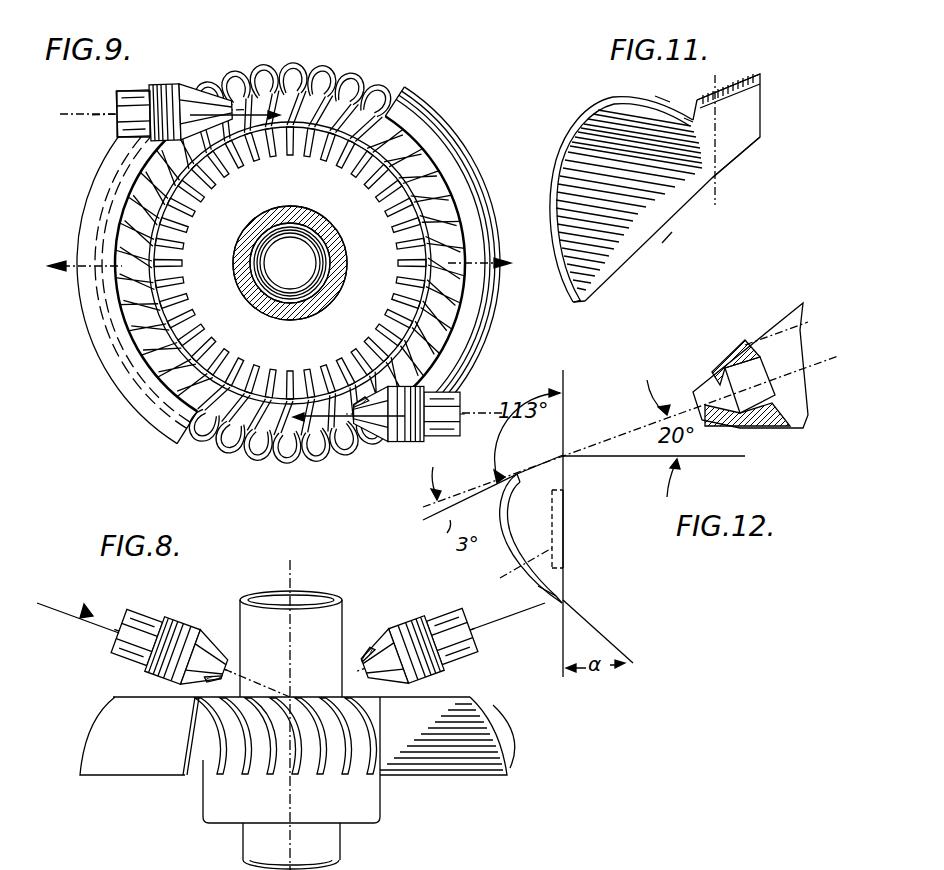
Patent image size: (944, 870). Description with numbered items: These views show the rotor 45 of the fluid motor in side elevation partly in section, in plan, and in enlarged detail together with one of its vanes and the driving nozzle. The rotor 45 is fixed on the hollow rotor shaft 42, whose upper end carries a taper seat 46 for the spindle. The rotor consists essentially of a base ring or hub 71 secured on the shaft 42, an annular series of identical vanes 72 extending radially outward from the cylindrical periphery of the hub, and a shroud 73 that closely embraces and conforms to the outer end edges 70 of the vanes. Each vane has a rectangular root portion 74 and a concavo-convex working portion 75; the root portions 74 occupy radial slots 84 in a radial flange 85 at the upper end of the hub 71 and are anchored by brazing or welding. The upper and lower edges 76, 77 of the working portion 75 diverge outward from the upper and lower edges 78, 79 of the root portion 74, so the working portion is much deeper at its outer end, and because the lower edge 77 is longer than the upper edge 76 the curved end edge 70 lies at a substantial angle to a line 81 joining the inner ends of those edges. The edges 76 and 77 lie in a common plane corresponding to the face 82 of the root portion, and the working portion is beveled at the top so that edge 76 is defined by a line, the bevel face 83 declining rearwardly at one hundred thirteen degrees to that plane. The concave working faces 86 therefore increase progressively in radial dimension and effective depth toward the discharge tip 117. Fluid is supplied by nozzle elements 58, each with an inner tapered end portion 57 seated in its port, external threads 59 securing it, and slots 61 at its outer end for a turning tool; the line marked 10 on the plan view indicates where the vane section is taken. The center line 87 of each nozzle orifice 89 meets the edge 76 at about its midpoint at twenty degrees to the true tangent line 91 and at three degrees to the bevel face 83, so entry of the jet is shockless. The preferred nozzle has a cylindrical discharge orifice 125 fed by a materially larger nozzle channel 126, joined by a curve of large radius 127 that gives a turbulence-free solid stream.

In FIG. 9, the section line 10- 10 is at (284, 266).
In FIG. 9, the rotor shaft 42 is at (306, 300).
In FIG. 8, the rotor shaft 42 is at (336, 598).
In FIG. 9, the rotor 45 is at (113, 370).
In FIG. 8, the rotor 45 is at (523, 728).
In FIG. 9, the taper seat 46 is at (266, 292).
In FIG. 8, the inner tapered end portion 57 is at (200, 632).
In FIG. 9, the nozzle element 58 is at (152, 95).
In FIG. 8, the nozzle element 58 is at (143, 670).
In FIG. 8, the externally threaded portion 59 is at (163, 627).
In FIG. 9, the slots 61 is at (462, 405).
In FIG. 8, the slots 61 is at (143, 615).
In FIG. 11, the outer end edge of vane 70 is at (580, 128).
In FIG. 12, the outer end edge of vane 70 is at (504, 514).
In FIG. 9, the hub 71 is at (341, 202).
In FIG. 8, the hub 71 is at (370, 807).
In FIG. 9, the vanes 72 is at (352, 78).
In FIG. 11, the vanes 72 is at (662, 243).
In FIG. 8, the vanes 72 is at (282, 768).
In FIG. 8, the shroud 73 is at (178, 742).
In FIG. 11, the root portion 74 is at (761, 140).
In FIG. 12, the root portion 74 is at (515, 568).
In FIG. 11, the working portion 75 is at (617, 262).
In FIG. 12, the working portion 75 is at (538, 592).
In FIG. 11, the upper edge of working portion 76 is at (686, 118).
In FIG. 12, the upper edge of working portion 76 is at (566, 452).
In FIG. 8, the upper edge of working portion 76 is at (302, 697).
In FIG. 11, the lower edge of working portion 77 is at (630, 242).
In FIG. 12, the lower edge of working portion 77 is at (563, 603).
In FIG. 8, the lower edge of working portion 77 is at (244, 760).
In FIG. 11, the upper edge of root portion 78 is at (730, 92).
In FIG. 11, the lower edge of root portion 79 is at (738, 162).
In FIG. 11, the line intersecting inner ends of edges 81 is at (724, 150).
In FIG. 12, the face of root portion 82 is at (566, 527).
In FIG. 11, the bevel face 83 is at (665, 100).
In FIG. 12, the bevel face 83 is at (522, 470).
In FIG. 9, the radial slots 84 is at (198, 178).
In FIG. 9, the radial flange 85 is at (388, 300).
In FIG. 11, the concave face 86 is at (673, 200).
In FIG. 12, the concave face 86 is at (535, 507).
In FIG. 8, the concave face 86 is at (225, 766).
In FIG. 9, the center line 87 is at (107, 122).
In FIG. 12, the center line 87 is at (640, 428).
In FIG. 8, the center line 87 is at (93, 598).
In FIG. 8, the orifice 89 is at (222, 660).
In FIG. 12, the true tangent line 91 is at (705, 458).
In FIG. 11, the discharge tip 117 is at (588, 302).
In FIG. 12, the discharge orifice 125 is at (696, 390).
In FIG. 12, the nozzle channel 126 is at (770, 335).
In FIG. 12, the curve of large radius 127 is at (728, 365).